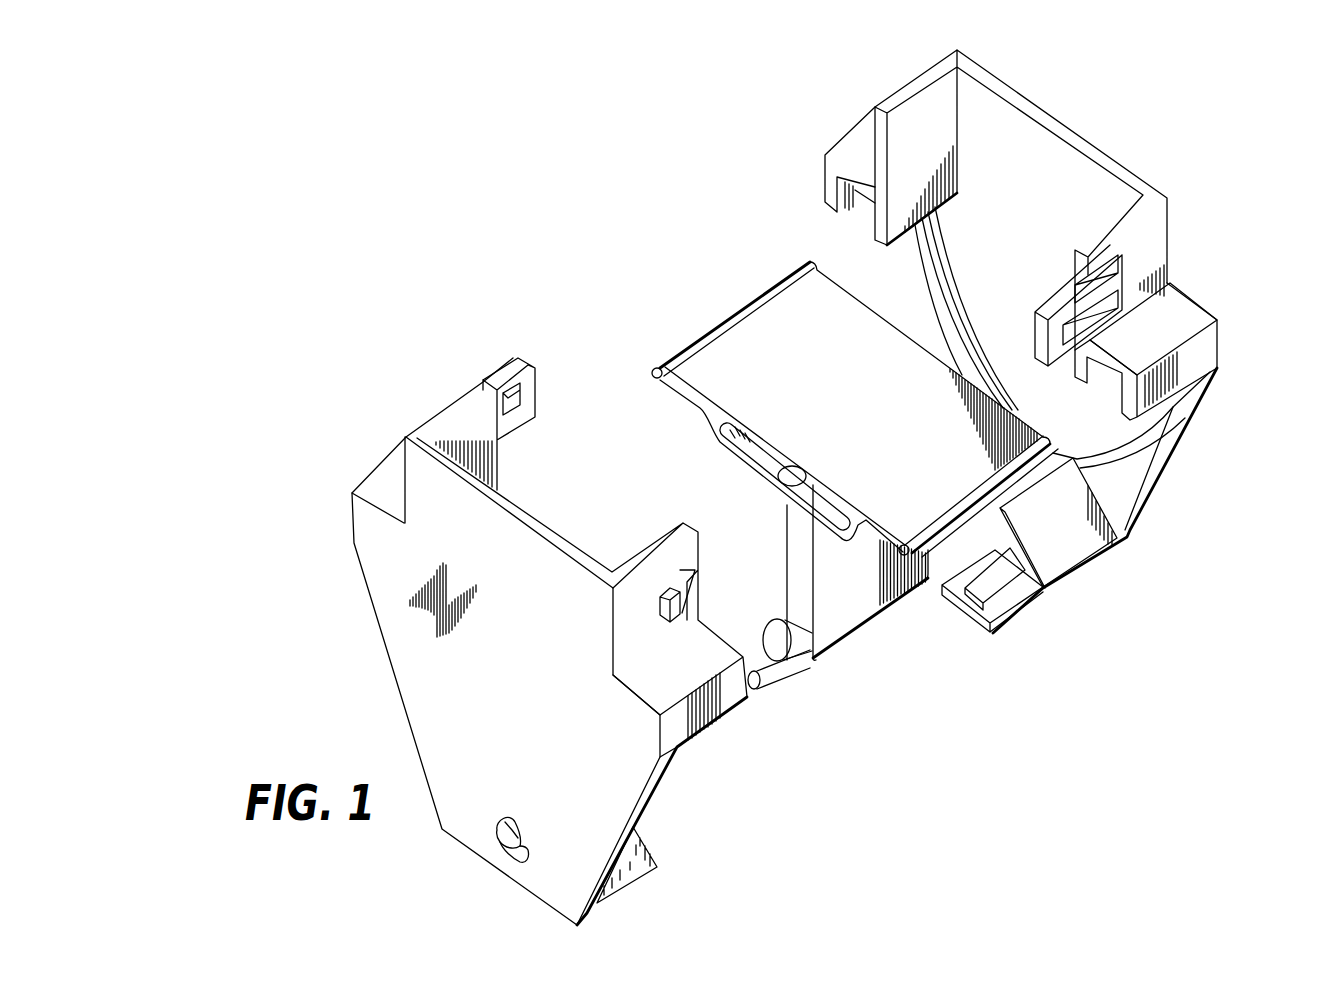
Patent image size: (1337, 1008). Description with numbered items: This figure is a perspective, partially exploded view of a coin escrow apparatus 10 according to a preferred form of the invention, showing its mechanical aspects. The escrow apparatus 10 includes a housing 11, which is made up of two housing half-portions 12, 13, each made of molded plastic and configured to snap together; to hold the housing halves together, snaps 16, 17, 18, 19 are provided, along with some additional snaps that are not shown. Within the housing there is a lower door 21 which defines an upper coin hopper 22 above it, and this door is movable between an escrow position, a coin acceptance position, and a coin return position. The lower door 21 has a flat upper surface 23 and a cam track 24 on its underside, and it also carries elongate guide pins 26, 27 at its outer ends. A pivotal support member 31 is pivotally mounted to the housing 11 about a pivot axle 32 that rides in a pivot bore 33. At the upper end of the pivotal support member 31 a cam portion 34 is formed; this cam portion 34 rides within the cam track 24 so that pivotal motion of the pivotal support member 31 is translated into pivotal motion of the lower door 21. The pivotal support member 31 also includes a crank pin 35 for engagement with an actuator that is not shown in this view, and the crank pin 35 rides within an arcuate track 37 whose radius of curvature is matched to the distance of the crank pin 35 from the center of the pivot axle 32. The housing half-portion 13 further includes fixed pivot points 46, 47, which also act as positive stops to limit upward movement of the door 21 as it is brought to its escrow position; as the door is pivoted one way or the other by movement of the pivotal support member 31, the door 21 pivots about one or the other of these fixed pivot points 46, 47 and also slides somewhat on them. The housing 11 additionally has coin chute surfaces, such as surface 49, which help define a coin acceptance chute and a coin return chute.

The escrow apparatus 10 is at (697, 194).
The housing 11 is at (1255, 332).
The housing half-portion 12 is at (535, 686).
The housing half-portion 13 is at (1105, 192).
The snap 16 is at (1040, 336).
The snap 17 is at (660, 613).
The snap 18 is at (530, 387).
The snap 19 is at (990, 607).
The lower door 21 is at (740, 335).
The upper coin hopper 22 is at (1042, 150).
The flat upper surface 23 is at (875, 420).
The cam track 24 is at (758, 461).
The elongate guide pin 26 is at (655, 380).
The elongate guide pin 27 is at (922, 590).
The pivotal support member 31 is at (840, 617).
The pivot axle 32 is at (786, 622).
The pivot bore 33 is at (497, 830).
The cam portion 34 is at (792, 480).
The crank pin 35 is at (780, 678).
The arcuate track 37 is at (520, 860).
The fixed pivot point 46 is at (900, 228).
The fixed pivot point 47 is at (1080, 372).
The coin chute surface 49 is at (1060, 523).